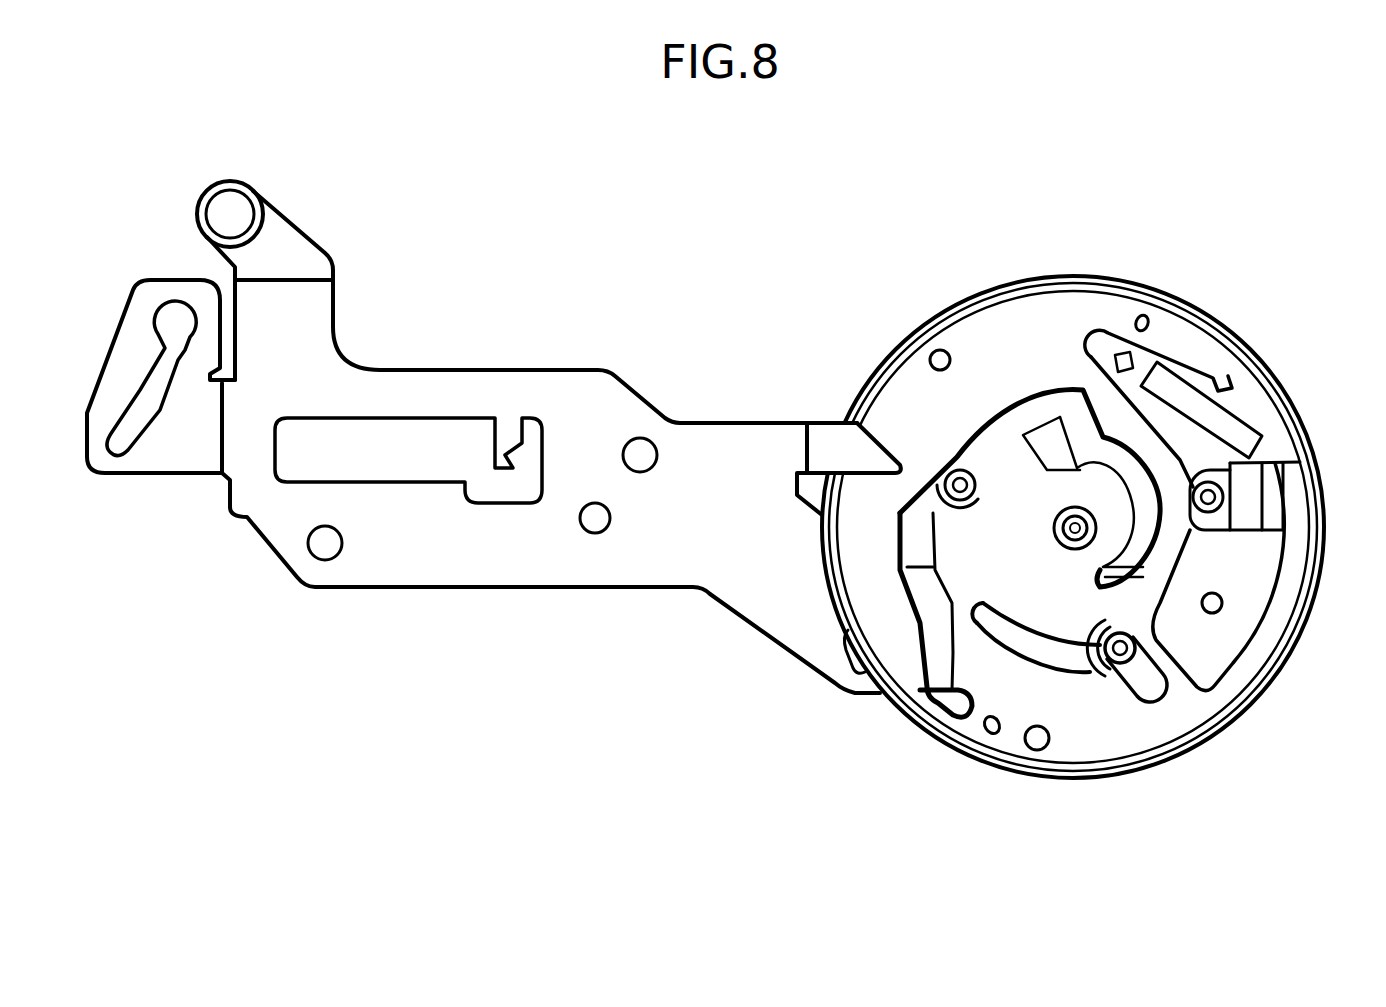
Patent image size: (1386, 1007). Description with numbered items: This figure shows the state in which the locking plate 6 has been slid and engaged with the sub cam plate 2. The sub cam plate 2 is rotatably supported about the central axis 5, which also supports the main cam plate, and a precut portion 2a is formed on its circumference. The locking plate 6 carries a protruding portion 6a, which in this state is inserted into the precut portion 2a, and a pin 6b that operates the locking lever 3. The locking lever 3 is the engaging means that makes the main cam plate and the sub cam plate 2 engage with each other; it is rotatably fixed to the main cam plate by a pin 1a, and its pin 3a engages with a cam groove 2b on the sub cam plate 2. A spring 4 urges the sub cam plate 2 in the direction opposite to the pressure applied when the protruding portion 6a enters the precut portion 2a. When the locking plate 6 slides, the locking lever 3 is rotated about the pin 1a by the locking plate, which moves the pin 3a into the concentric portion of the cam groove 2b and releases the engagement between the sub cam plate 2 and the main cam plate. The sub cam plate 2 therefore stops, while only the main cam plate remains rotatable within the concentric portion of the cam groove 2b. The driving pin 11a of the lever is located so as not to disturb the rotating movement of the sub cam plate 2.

The pin 1a is at (1217, 603).
The sub cam plate 2 is at (1080, 327).
The precut portion 2a is at (905, 390).
The cam groove 2b is at (1032, 653).
The locking lever 3 is at (1243, 513).
The pin 3a is at (1118, 656).
The spring 4 is at (1180, 387).
The central axis 5 is at (1070, 546).
The locking plate 6 is at (517, 553).
The protruding portion 6a is at (850, 443).
The pin 6b is at (1207, 497).
The driving pin 11a is at (903, 510).